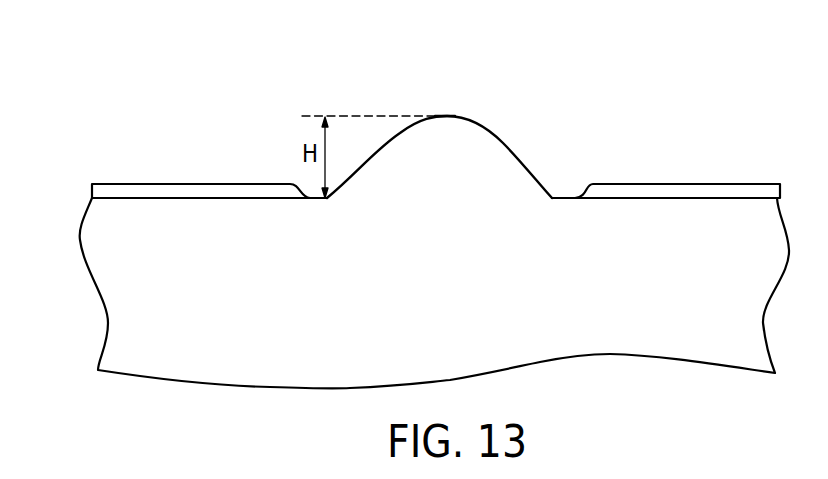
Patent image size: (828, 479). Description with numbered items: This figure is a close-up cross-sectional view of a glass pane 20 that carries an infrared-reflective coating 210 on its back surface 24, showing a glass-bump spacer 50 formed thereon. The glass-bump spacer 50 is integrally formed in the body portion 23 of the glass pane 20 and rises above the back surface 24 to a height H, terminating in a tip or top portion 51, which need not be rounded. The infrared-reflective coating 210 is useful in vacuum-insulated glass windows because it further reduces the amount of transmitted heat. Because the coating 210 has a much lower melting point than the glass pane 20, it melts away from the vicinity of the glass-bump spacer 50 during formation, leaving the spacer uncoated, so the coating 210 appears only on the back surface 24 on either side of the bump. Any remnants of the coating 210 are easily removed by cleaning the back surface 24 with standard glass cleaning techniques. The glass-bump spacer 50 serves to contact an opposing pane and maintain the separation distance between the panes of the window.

The glass pane 20 is at (192, 70).
The body portion 23 is at (190, 300).
The infrared-reflective coating 210 is at (127, 192).
The back surface 24 is at (608, 198).
The glass-bump spacer 50 is at (463, 147).
The top portion 51 is at (440, 116).